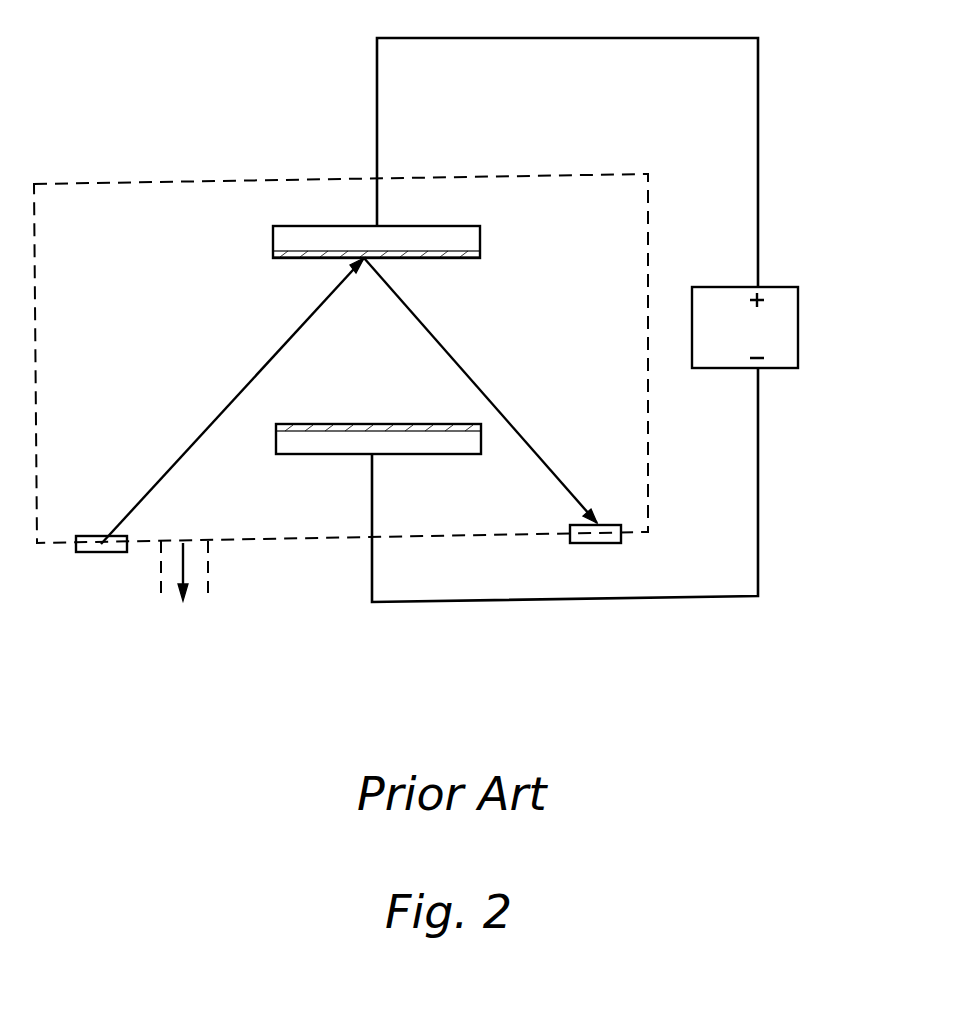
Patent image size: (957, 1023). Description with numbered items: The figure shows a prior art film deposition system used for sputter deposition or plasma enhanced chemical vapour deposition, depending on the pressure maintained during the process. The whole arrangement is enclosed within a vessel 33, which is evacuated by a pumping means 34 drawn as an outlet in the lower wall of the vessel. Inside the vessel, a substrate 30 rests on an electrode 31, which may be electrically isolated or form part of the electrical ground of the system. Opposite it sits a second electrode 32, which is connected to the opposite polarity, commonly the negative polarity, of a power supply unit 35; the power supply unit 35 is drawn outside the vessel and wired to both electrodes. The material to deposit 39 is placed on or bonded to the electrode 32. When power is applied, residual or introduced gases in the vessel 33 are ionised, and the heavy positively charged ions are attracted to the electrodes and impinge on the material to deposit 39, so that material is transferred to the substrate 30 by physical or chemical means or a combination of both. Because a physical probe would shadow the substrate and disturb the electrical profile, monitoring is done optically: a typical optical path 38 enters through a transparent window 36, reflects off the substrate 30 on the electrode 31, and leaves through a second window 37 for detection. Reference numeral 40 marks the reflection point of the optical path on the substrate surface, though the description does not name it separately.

The substrate 30 is at (483, 253).
The electrode 31 is at (483, 233).
The second electrode 32 is at (333, 443).
The vessel 33 is at (185, 182).
The pumping means 34 is at (205, 608).
The power supply unit 35 is at (792, 322).
The window 36 is at (103, 547).
The window 37 is at (576, 528).
The optical path 38 is at (200, 427).
The material to deposit 39 is at (412, 427).
The target surface irradiated by laser 40 is at (305, 259).